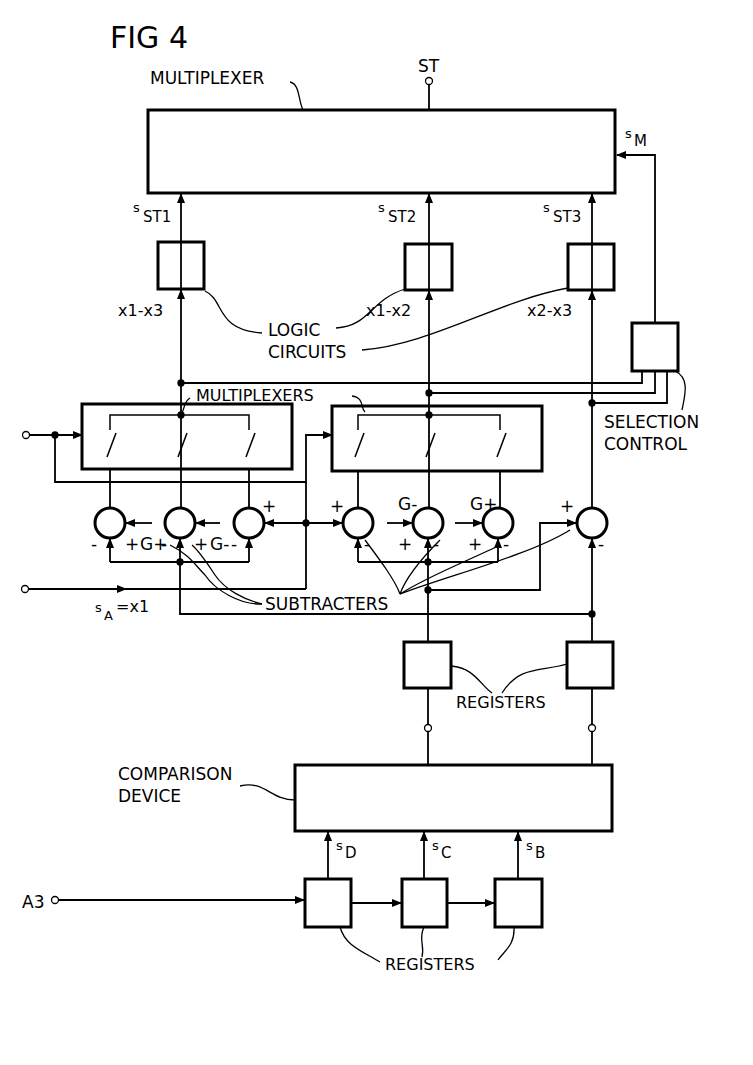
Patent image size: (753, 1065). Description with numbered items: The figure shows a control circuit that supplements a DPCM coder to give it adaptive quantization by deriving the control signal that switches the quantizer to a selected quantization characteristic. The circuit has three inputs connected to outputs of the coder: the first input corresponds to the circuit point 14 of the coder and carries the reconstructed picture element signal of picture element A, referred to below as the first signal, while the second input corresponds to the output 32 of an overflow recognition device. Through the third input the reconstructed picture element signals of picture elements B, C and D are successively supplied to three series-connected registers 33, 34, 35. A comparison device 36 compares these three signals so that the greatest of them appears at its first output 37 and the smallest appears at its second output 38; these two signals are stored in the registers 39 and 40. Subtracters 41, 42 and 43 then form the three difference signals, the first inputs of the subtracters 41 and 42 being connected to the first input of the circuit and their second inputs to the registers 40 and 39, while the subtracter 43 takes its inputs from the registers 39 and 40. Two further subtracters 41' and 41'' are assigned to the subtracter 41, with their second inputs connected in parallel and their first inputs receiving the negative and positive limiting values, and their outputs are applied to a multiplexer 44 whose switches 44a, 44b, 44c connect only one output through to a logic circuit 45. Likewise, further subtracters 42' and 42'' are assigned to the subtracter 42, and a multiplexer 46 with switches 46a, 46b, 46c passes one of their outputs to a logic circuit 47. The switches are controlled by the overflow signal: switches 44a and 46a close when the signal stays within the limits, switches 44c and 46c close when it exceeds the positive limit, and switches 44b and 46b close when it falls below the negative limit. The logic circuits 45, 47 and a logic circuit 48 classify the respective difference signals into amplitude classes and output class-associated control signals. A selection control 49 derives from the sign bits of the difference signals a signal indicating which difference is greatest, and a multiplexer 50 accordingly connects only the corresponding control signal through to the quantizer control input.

The multiplexer 50 is at (381, 151).
The logic circuit 45 is at (181, 265).
The logic circuit 47 is at (428, 267).
The logic circuit 48 is at (591, 267).
The selection control 49 is at (655, 347).
The multiplexer 44 is at (187, 423).
The switch 44a is at (269, 435).
The switch 44b is at (203, 446).
The switch 44c is at (130, 446).
The multiplexer 46 is at (455, 438).
The switch 46a is at (380, 446).
The switch 46b is at (451, 446).
The switch 46c is at (519, 435).
The subtracter 41 is at (257, 532).
The subtracter 41' is at (197, 515).
The subtracter 41'' is at (129, 515).
The subtracter 42 is at (349, 533).
The subtracter 42' is at (441, 533).
The subtracter 42'' is at (512, 533).
The subtracter 43 is at (606, 519).
The register 39 is at (427, 665).
The register 40 is at (590, 665).
The first output 37 is at (396, 726).
The second output 38 is at (559, 726).
The comparison device 36 is at (453, 798).
The register 35 is at (328, 903).
The register 34 is at (424, 903).
The register 33 is at (518, 903).
The output of the overflow recognition device 32 is at (52, 425).
The circuit point 14 is at (164, 577).